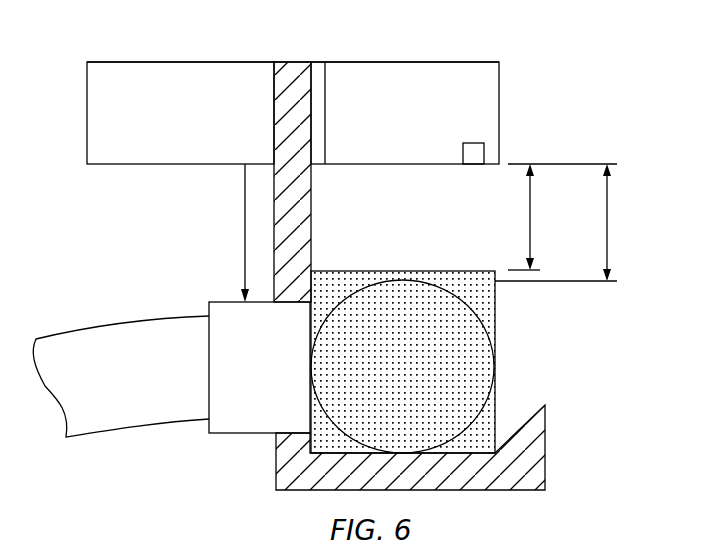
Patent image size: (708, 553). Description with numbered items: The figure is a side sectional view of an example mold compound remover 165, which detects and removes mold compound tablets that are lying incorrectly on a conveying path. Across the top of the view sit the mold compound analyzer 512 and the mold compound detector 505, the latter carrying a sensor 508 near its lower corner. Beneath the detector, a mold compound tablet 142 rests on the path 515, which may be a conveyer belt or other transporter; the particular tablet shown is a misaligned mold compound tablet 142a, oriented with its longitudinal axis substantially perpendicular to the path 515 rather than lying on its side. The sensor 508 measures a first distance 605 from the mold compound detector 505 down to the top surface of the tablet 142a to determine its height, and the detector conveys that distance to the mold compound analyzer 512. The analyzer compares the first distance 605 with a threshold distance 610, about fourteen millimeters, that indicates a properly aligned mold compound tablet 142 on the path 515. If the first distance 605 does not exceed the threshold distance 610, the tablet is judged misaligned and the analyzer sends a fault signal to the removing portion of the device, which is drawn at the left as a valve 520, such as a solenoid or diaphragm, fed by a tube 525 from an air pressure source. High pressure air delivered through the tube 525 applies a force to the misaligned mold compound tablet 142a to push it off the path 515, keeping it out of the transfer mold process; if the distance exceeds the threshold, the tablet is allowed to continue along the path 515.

The mold compound remover 165 is at (556, 71).
The mold compound analyzer 512 is at (199, 126).
The mold compound detector 505 is at (431, 126).
The sensor 508 is at (473, 158).
The valve 520 is at (240, 424).
The tube 525 is at (137, 416).
The misaligned mold compound tablet 142a is at (487, 312).
The mold compound tablet 142 is at (485, 371).
The path 515 is at (546, 448).
The first distance 605 is at (530, 218).
The threshold distance 610 is at (607, 222).